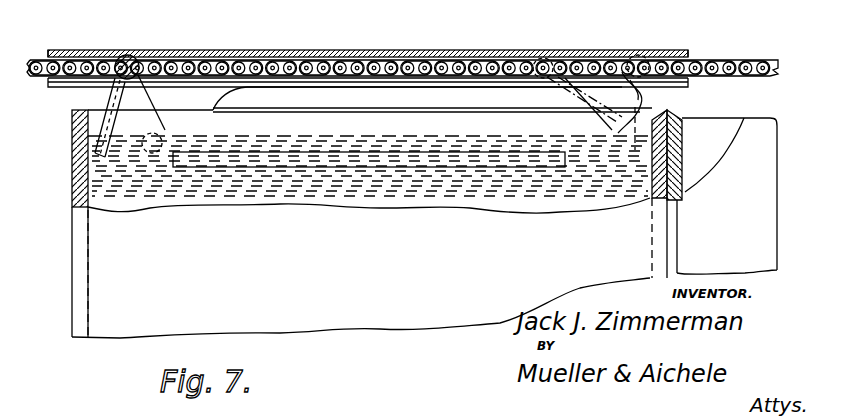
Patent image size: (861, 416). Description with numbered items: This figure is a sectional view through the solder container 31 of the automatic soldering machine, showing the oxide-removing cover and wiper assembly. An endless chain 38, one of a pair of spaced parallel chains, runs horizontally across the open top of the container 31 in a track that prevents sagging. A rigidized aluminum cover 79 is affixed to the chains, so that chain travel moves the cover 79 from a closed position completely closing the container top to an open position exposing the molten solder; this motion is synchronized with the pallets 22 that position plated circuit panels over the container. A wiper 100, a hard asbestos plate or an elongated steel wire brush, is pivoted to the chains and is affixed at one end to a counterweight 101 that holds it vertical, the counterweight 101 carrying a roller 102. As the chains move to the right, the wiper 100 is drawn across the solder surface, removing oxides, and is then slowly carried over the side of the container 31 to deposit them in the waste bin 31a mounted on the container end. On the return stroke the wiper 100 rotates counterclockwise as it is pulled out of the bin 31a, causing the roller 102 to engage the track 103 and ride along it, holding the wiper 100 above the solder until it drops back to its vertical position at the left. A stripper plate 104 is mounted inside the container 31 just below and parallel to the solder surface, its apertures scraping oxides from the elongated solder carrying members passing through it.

The endless chain 38 is at (67, 62).
The rigidized aluminum cover 79 is at (480, 52).
The track 103 is at (333, 97).
The solder container 31 is at (103, 190).
The waste bin 31a is at (722, 130).
The stripper plate 104 is at (235, 160).
The wiper 100 is at (115, 100).
The counterweight 101 is at (143, 87).
The roller 102 is at (162, 127).
The pallet 22 is at (395, 4).